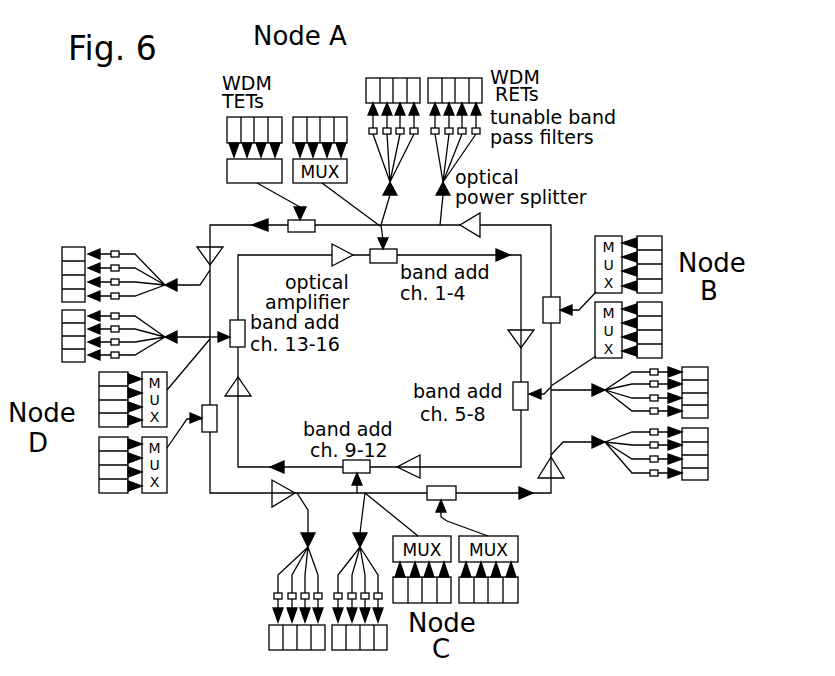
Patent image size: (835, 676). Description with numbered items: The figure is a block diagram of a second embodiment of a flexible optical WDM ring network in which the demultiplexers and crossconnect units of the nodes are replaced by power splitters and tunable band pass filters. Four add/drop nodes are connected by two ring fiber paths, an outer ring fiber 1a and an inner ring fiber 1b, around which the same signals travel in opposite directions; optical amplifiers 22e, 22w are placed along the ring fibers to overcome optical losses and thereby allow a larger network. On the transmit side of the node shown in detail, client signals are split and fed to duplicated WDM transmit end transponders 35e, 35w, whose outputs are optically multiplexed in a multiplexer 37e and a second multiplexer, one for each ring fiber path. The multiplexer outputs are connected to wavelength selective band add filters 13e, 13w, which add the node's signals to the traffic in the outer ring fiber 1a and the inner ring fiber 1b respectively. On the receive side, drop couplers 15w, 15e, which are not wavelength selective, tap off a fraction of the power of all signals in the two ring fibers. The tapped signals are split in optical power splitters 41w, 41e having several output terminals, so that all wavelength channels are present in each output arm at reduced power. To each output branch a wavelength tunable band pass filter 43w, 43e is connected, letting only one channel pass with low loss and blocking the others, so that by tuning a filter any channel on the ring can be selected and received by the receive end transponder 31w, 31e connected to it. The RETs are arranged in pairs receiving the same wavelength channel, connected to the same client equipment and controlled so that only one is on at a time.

The outer ring fiber 1a is at (552, 240).
The inner ring fiber 1b is at (520, 290).
The band add filter 13e is at (290, 222).
The band add filter 13w is at (384, 263).
The drop coupler 15e is at (369, 262).
The drop coupler 15w is at (441, 216).
The optical amplifier 22e is at (332, 259).
The optical amplifier 22w is at (480, 222).
The receive end transponder 31e is at (366, 80).
The receive end transponder 31w is at (482, 80).
The transmit end transponder 35e is at (227, 124).
The transmit end transponder 35w is at (300, 117).
The multiplexer 37e is at (227, 168).
The optical power splitter 41e is at (385, 190).
The optical power splitter 41w is at (437, 186).
The tunable band pass filter 43e is at (368, 131).
The tunable band pass filter 43w is at (482, 133).